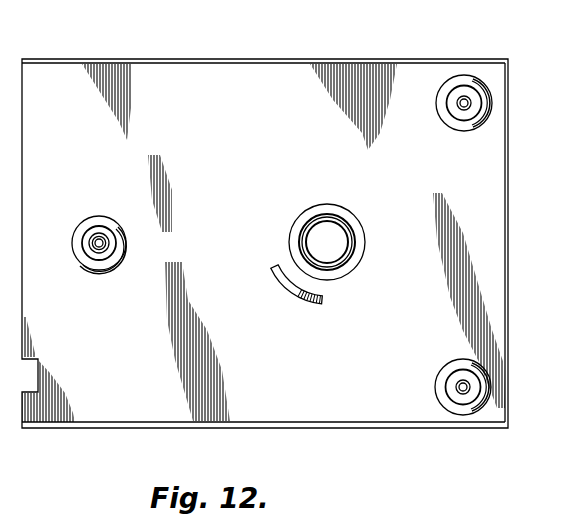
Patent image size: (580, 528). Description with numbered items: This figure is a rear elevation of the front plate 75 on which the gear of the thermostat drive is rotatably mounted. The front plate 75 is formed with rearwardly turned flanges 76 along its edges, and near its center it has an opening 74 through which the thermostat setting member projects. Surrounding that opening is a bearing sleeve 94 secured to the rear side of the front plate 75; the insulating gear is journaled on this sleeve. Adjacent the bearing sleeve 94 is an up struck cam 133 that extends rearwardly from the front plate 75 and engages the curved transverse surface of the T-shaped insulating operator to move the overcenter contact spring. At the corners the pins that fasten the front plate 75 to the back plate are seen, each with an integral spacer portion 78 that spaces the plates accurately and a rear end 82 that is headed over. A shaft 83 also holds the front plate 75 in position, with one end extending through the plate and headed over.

The opening 74 is at (325, 227).
The front plate 75 is at (163, 147).
The rearwardly turned flanges 76 is at (182, 62).
The integral spacer portions 78 is at (463, 121).
The rear ends of the pins 82 is at (458, 103).
The shaft 83 is at (112, 246).
The bearing sleeve 94 is at (353, 242).
The up struck cam 133 is at (295, 292).